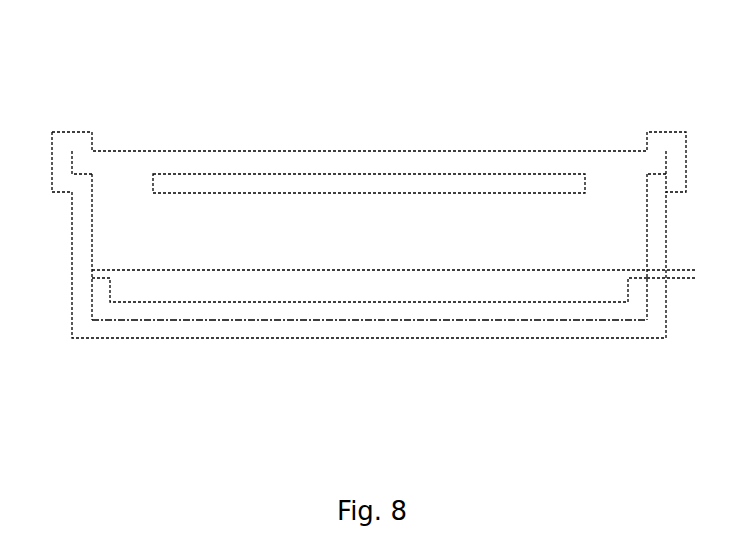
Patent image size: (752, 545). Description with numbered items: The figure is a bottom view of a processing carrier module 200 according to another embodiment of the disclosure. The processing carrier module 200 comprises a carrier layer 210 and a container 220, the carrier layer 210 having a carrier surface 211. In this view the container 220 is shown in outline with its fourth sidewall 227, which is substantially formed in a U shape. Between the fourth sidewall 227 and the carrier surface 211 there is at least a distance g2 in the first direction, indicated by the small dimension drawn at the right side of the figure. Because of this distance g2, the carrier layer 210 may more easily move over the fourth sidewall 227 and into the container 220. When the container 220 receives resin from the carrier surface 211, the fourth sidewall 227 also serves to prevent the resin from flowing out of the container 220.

The processing carrier module 200 is at (84, 42).
The carrier layer 210 is at (366, 112).
The carrier surface 211 is at (193, 282).
The container 220 is at (362, 352).
The fourth sidewall 227 is at (601, 310).
The distance g2 is at (693, 253).